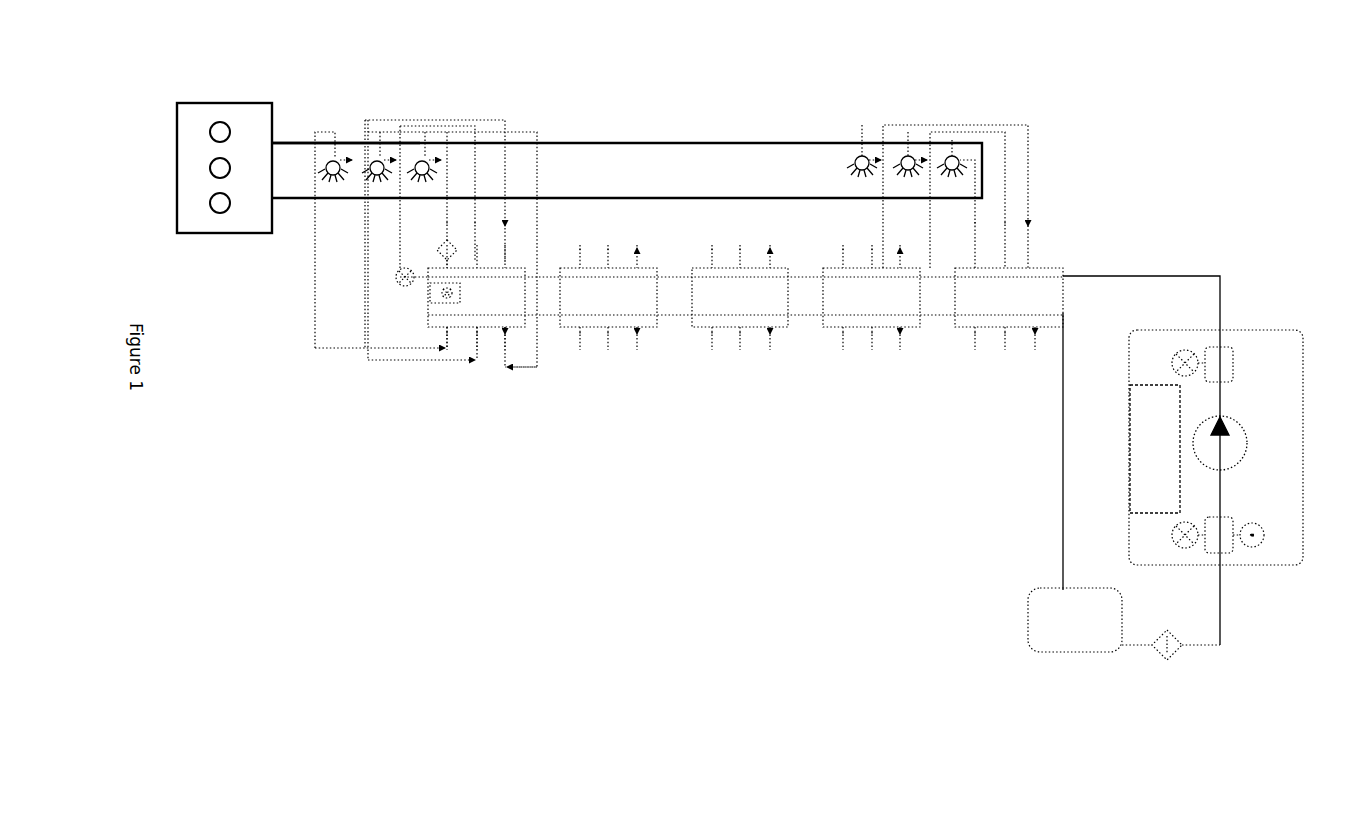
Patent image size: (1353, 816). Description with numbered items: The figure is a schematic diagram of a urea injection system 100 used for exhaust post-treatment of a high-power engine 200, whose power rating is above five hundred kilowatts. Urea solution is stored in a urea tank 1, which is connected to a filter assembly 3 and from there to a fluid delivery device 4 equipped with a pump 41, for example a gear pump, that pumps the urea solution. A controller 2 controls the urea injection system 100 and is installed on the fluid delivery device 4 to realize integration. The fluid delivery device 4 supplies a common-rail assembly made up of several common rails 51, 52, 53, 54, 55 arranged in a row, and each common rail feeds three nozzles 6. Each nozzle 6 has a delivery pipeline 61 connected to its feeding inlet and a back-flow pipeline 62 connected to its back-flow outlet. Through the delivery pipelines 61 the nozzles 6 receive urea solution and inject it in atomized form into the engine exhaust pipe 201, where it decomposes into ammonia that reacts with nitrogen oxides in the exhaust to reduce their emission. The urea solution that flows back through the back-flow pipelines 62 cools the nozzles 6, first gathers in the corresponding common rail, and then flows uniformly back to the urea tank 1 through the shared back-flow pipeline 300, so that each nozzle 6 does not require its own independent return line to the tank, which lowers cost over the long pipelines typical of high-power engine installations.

The urea injection system 100 is at (716, 86).
The engine 200 is at (218, 238).
The engine exhaust pipe 201 is at (286, 152).
The nozzle 6 is at (334, 174).
The delivery pipeline 61 is at (443, 162).
The back-flow pipeline 62 is at (402, 350).
The common rail 51 is at (515, 300).
The common rail 52 is at (620, 305).
The common rail 53 is at (752, 305).
The common rail 54 is at (888, 305).
The common rail 55 is at (1030, 292).
The back-flow pipeline 300 is at (1062, 440).
The fluid delivery device 4 is at (1237, 330).
The pump 41 is at (1235, 448).
The controller 2 is at (1140, 432).
The urea tank 1 is at (1040, 618).
The filter assembly 3 is at (1172, 656).